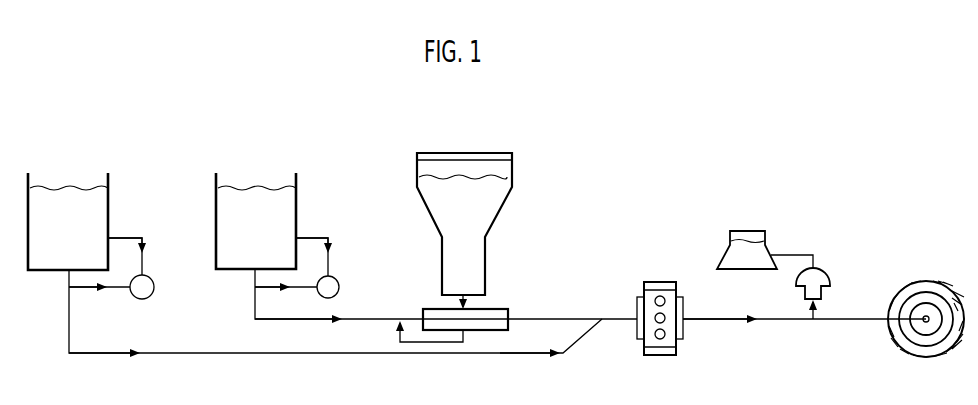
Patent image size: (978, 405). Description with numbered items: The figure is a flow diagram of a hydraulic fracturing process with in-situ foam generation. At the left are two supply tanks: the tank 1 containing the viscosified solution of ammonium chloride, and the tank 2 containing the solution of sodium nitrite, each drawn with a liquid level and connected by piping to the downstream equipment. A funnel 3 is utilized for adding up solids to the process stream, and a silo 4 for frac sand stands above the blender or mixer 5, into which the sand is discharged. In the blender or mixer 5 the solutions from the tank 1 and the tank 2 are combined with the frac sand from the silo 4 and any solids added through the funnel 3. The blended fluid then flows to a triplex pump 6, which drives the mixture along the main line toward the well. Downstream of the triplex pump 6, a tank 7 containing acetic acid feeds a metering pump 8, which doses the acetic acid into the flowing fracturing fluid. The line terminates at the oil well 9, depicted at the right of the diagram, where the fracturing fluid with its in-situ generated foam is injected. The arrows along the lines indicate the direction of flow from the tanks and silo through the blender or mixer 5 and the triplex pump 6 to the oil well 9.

The tank containing the viscosified solution of ammonium chloride 1 is at (259, 198).
The tank containing the solution of sodium nitrite 2 is at (70, 198).
The funnel 3 is at (155, 290).
The silo for frac sand 4 is at (437, 201).
The blender or mixer 5 is at (495, 309).
The triplex pump 6 is at (655, 282).
The tank containing acetic acid 7 is at (740, 250).
The metering pump 8 is at (821, 266).
The oil well 9 is at (938, 282).